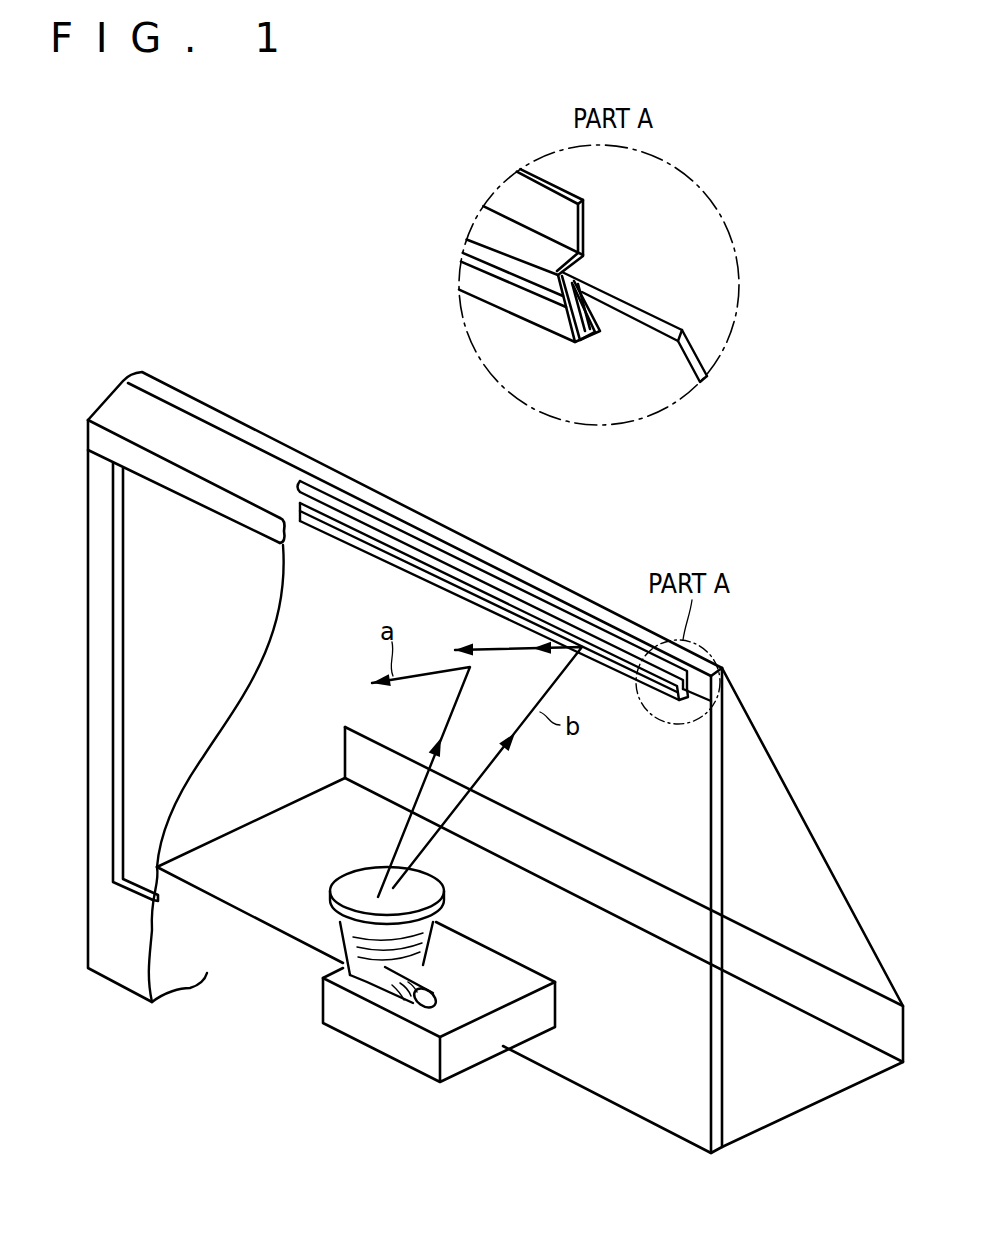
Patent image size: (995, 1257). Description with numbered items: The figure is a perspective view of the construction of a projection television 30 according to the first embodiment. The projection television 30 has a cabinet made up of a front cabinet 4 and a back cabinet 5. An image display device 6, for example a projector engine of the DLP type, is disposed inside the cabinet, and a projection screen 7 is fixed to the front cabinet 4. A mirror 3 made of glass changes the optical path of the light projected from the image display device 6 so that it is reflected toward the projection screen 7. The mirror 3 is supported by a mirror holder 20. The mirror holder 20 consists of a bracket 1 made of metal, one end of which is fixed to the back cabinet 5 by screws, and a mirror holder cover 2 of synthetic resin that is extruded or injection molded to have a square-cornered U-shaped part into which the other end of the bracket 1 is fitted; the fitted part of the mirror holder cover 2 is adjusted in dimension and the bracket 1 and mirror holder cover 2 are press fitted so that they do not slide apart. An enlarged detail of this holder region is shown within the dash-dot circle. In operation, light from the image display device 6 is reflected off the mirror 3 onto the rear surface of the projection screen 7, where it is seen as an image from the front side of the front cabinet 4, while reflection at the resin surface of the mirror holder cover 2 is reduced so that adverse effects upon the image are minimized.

The bracket 1 is at (510, 235).
The mirror holder cover 2 is at (513, 300).
The mirror 3 is at (630, 810).
The front cabinet 4 is at (120, 402).
The back cabinet 5 is at (823, 856).
The image display device 6 is at (343, 947).
The projection screen 7 is at (140, 638).
The mirror holder 20 is at (403, 268).
The projection television 30 is at (92, 1109).